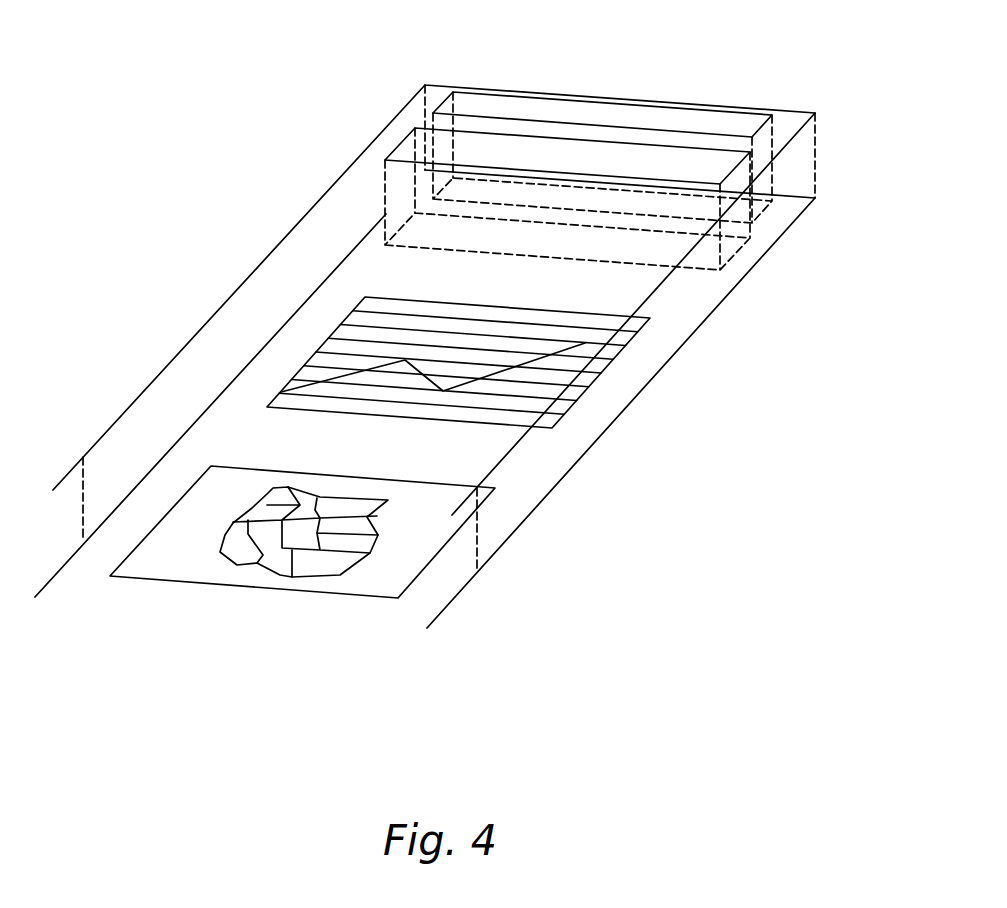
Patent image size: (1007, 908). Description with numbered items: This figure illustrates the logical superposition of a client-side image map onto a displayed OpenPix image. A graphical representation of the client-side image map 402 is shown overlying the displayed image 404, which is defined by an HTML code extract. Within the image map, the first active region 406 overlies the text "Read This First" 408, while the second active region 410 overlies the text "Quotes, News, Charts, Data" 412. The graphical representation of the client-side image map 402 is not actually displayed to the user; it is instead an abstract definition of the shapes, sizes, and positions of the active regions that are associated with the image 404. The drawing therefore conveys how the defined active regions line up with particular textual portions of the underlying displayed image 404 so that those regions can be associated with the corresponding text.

The client-side image map 402 is at (309, 212).
The displayed image 404 is at (648, 382).
The first active region 406 is at (660, 105).
The text "Read This First" 408 is at (758, 205).
The second active region 410 is at (403, 143).
The text "Quotes, News, Charts, Data" 412 is at (733, 247).